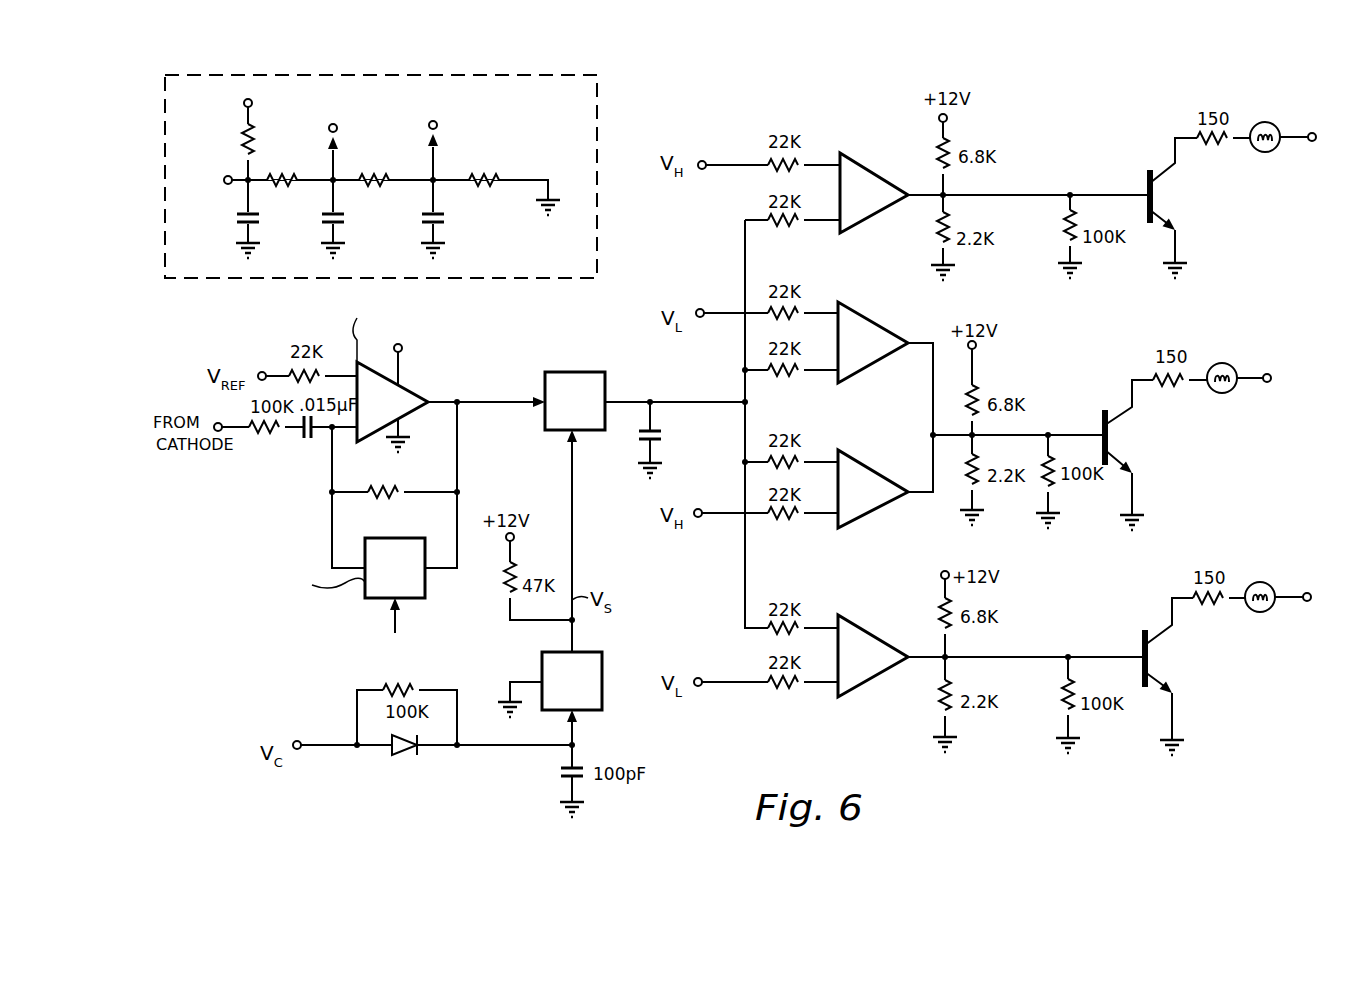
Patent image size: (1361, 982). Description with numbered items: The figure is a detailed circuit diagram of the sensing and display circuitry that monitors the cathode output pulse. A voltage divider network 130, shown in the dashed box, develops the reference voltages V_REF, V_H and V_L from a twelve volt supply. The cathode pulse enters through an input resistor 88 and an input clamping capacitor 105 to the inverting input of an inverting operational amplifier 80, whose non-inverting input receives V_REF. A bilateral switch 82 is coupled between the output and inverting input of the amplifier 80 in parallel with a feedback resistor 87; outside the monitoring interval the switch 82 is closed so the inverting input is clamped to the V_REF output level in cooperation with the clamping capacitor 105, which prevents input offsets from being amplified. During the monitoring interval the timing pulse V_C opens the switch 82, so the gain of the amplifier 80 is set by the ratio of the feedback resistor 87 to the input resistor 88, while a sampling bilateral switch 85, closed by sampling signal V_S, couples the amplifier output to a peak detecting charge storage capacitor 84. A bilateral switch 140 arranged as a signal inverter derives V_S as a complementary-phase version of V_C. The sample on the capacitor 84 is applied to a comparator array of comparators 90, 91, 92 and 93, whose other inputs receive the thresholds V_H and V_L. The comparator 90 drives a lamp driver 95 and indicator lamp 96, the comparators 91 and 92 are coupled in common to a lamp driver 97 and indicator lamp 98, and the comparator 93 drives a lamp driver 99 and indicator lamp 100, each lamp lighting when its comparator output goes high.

The voltage divider network 130 is at (597, 113).
The inverting operational amplifier 80 is at (405, 390).
The input resistor 88 is at (252, 435).
The input clamping capacitor 105 is at (308, 443).
The feedback resistor 87 is at (403, 500).
The bilateral switch 82 is at (365, 598).
The sampling bilateral switch 85 is at (607, 383).
The peak detecting charge storage capacitor 84 is at (663, 436).
The bilateral switch 140 is at (603, 662).
The comparator 90 is at (881, 176).
The comparator 91 is at (890, 310).
The comparator 92 is at (880, 472).
The comparator 93 is at (868, 632).
The lamp driver 95 is at (1195, 214).
The indicator lamp 96 is at (1272, 123).
The lamp driver 97 is at (1143, 451).
The indicator lamp 98 is at (1230, 364).
The lamp driver 99 is at (1197, 675).
The indicator lamp 100 is at (1270, 583).